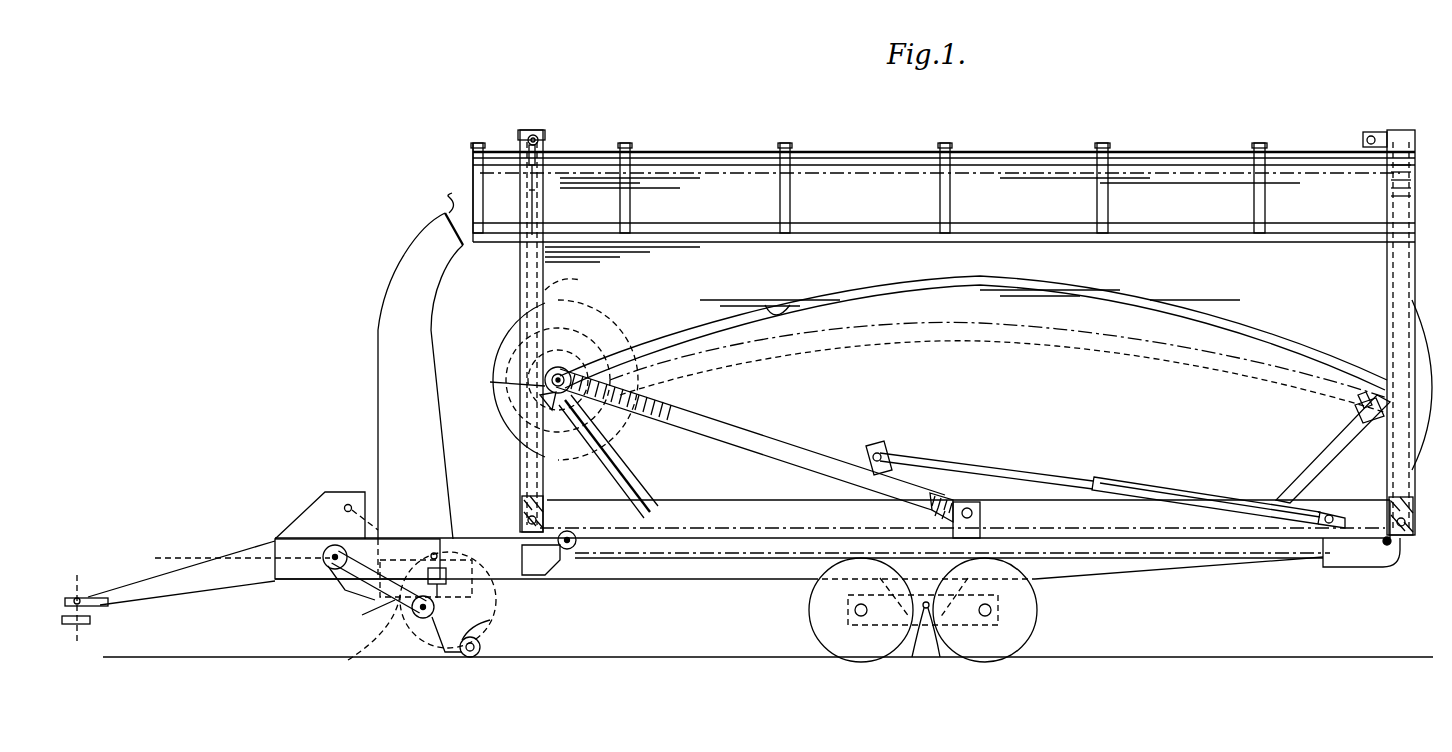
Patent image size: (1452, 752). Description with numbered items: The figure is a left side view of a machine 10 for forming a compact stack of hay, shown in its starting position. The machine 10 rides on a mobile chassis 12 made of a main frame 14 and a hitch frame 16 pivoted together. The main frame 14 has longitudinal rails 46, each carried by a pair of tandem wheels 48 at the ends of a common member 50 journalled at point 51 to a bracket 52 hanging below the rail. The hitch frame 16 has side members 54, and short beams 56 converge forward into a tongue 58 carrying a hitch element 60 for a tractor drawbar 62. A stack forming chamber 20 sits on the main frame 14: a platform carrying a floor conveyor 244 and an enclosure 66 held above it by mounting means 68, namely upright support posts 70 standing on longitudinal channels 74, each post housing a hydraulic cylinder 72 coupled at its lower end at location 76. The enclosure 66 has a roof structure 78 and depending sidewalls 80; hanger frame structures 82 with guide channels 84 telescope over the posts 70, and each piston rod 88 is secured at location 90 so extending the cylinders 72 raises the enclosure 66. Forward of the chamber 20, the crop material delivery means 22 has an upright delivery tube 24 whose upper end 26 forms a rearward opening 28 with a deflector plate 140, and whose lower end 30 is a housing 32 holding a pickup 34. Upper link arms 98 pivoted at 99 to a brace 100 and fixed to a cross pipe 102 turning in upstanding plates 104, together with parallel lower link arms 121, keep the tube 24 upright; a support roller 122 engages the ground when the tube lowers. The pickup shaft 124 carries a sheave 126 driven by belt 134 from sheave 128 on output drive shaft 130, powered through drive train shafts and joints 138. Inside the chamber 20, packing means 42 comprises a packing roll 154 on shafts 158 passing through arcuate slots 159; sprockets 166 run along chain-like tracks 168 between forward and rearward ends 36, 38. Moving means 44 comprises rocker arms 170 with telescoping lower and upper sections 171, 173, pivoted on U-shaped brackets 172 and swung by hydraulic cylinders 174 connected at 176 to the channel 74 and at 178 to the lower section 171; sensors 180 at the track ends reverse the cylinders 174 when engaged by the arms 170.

The machine 10 is at (1208, 124).
The mobile chassis 12 is at (700, 590).
The main frame 14 is at (631, 585).
The hitch frame 16 is at (538, 586).
The stack forming chamber 20 is at (1375, 477).
The crop material delivery means 22 is at (370, 378).
The delivery tube 24 is at (376, 418).
The upper end 26 is at (410, 238).
The opening 28 is at (463, 248).
The lower end 30 is at (480, 622).
The housing 32 is at (362, 615).
The pickup 34 is at (398, 655).
The forward end 36 is at (513, 286).
The rearward end 38 is at (1420, 268).
The packing means 42 is at (480, 408).
The moving means 44 is at (948, 460).
The longitudinal rails 46 is at (748, 570).
The wheels 48 is at (860, 650).
The common member 50 is at (922, 618).
The pivot point 51 is at (930, 612).
The bracket 52 is at (918, 592).
The side member 54 is at (300, 573).
The short beams 56 is at (182, 590).
The tongue 58 is at (138, 582).
The hitch element 60 is at (82, 598).
The drawbar 62 is at (93, 620).
The enclosure 66 is at (688, 150).
The mounting means 68 is at (519, 500).
The support post 70 is at (526, 510).
The hydraulic cylinder 72 is at (548, 282).
The longitudinal channel 74 is at (680, 503).
The coupling location 76 is at (568, 528).
The roof structure 78 is at (1140, 150).
The sidewalls 80 is at (973, 333).
The hanger frame structure 82 is at (523, 131).
The guide channel 84 is at (545, 213).
The piston rod 88 is at (545, 195).
The securing location 90 is at (537, 140).
The upper link arm 98 is at (385, 540).
The pivot connection 99 is at (433, 552).
The brace 100 is at (452, 552).
The cross pipe 102 is at (349, 504).
The upstanding plate 104 is at (300, 512).
The lower link arm 121 is at (350, 658).
The support roller 122 is at (486, 650).
The shaft 124 is at (436, 614).
The sheave 126 is at (423, 620).
The sheave 128 is at (326, 568).
The output drive shaft 130 is at (328, 552).
The drive belt 134 is at (372, 594).
The drive train shafts and joints 138 is at (172, 556).
The deflector plate 140 is at (448, 208).
The packing roll 154 is at (602, 306).
The roll shaft 158 is at (560, 372).
The arcuate slot 159 is at (780, 308).
The sprocket 166 is at (618, 325).
The track 168 is at (878, 332).
The rocker arm 170 is at (706, 414).
The lower section 171 is at (775, 446).
The U-shaped bracket 172 is at (985, 522).
The upper section 173 is at (636, 364).
The hydraulic cylinder 174 is at (1140, 483).
The cylinder end connection 176 is at (1330, 514).
The piston end connection 178 is at (878, 453).
The sensor 180 is at (1358, 396).
The floor conveyor 244 is at (788, 526).